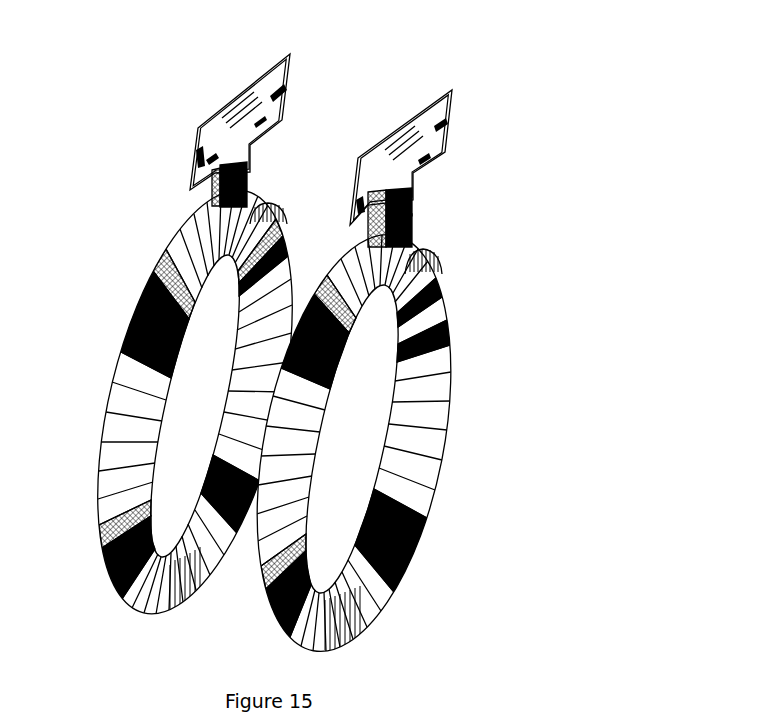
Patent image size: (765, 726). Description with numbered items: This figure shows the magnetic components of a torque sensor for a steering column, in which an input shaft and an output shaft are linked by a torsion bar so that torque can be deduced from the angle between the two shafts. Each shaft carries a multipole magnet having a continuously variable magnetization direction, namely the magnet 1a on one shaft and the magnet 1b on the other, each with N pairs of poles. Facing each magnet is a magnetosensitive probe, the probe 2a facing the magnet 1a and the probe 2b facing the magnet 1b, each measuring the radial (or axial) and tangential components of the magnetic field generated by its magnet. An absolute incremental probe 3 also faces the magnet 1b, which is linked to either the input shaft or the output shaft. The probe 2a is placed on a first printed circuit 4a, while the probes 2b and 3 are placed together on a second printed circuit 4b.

The multipole magnet 1a is at (203, 263).
The multipole magnet 1b is at (447, 365).
The magnetosensitive probe 2a is at (215, 198).
The magnetosensitive probe 2b is at (378, 191).
The absolute incremental probe 3 is at (420, 225).
The first printed circuit 4a is at (198, 128).
The second printed circuit 4b is at (425, 164).